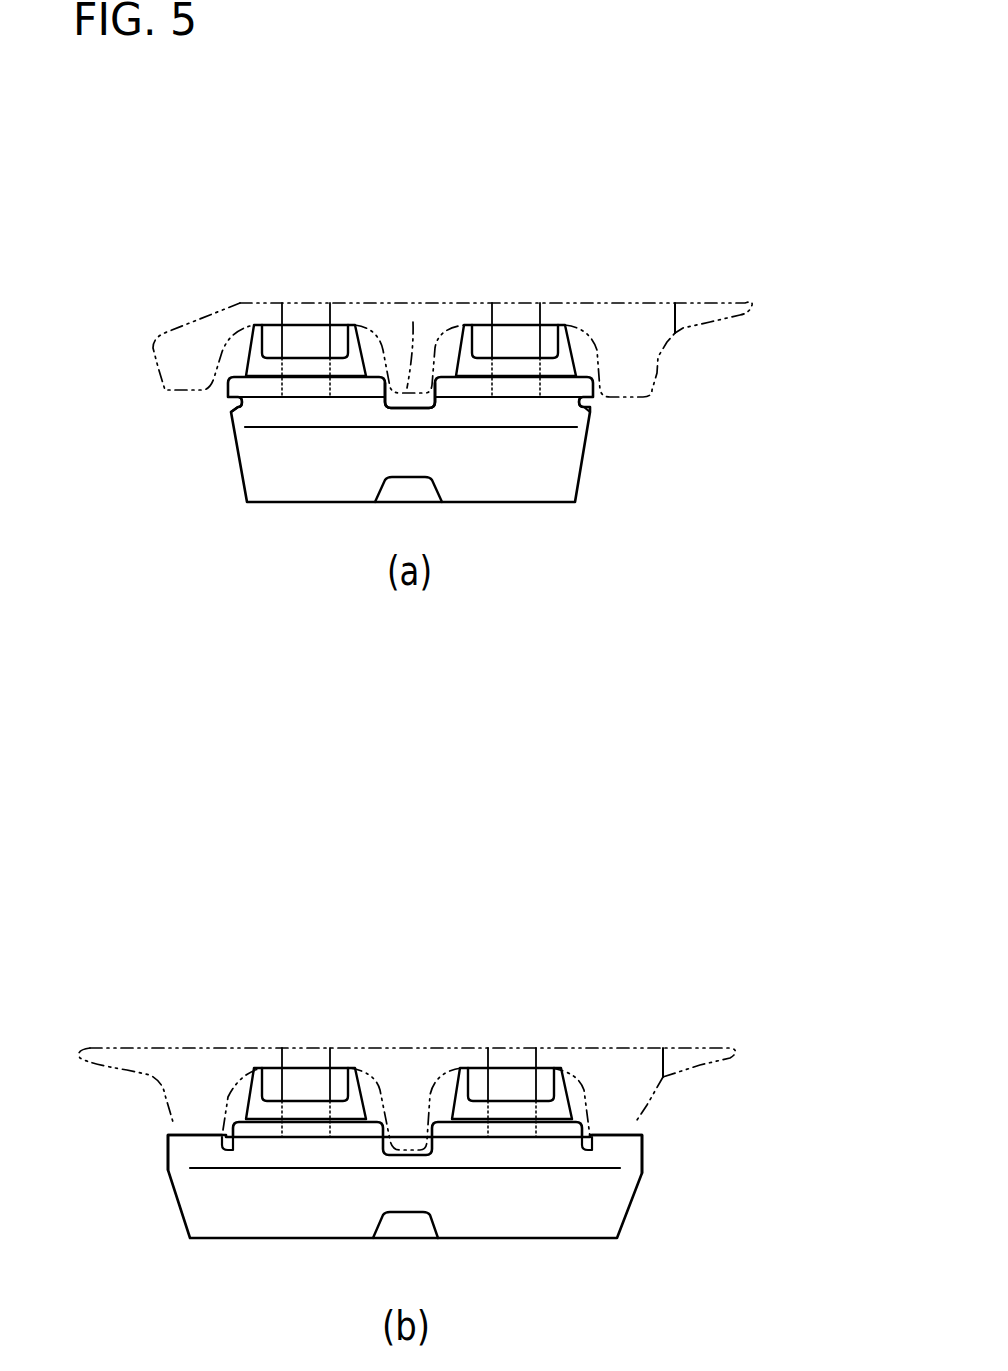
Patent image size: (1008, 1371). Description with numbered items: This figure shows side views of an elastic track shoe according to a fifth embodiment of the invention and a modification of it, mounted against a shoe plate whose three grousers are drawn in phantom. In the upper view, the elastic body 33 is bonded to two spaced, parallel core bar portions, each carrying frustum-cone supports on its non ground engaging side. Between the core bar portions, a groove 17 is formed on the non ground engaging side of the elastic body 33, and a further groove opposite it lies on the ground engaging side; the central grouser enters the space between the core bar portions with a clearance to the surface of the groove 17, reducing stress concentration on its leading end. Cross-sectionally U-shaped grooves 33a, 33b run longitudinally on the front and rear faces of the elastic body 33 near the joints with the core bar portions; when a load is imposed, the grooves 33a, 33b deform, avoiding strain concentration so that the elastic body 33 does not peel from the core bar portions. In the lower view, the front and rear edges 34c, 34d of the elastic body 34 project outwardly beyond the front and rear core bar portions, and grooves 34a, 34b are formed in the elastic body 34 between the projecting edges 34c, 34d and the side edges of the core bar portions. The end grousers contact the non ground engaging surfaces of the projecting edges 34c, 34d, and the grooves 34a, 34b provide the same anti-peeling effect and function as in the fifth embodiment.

The groove 17 is at (392, 404).
The elastic body 33 is at (577, 468).
The groove 33a is at (223, 405).
The groove 33b is at (593, 405).
The elastic body 34 is at (525, 1222).
The groove 34a is at (227, 1155).
The groove 34b is at (583, 1147).
The front edge 34c is at (192, 1140).
The rear edge 34d is at (608, 1140).